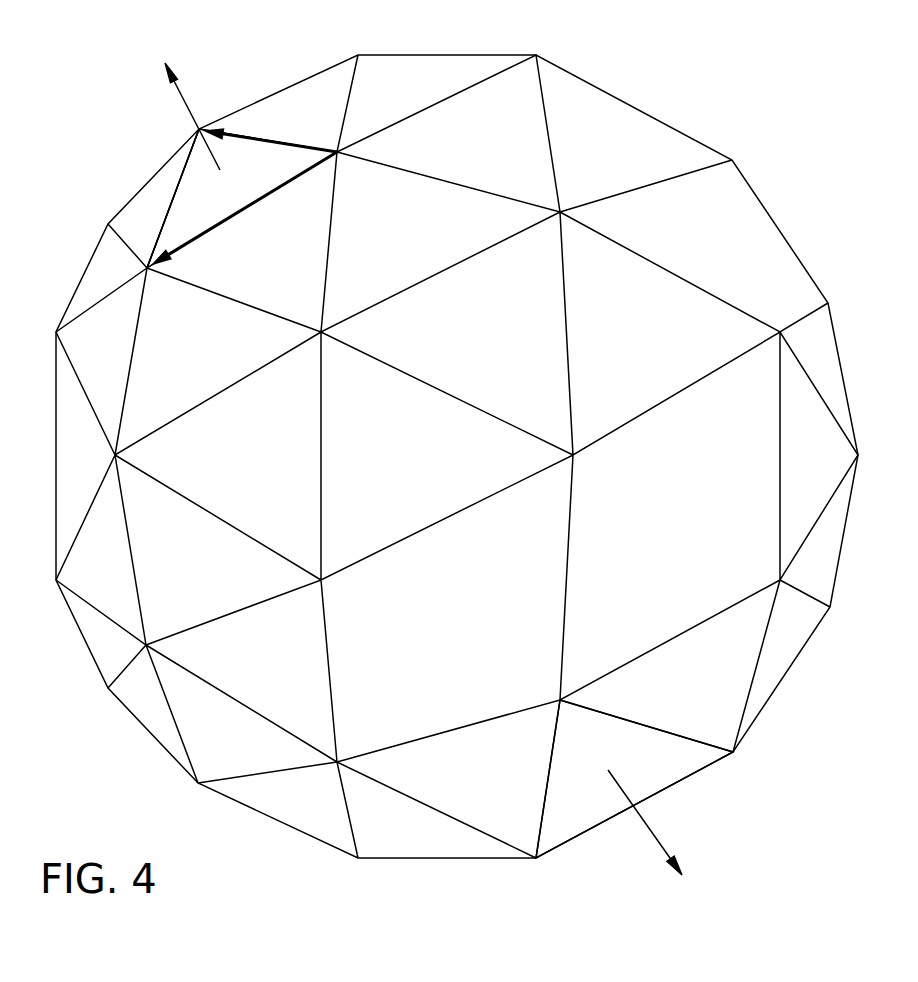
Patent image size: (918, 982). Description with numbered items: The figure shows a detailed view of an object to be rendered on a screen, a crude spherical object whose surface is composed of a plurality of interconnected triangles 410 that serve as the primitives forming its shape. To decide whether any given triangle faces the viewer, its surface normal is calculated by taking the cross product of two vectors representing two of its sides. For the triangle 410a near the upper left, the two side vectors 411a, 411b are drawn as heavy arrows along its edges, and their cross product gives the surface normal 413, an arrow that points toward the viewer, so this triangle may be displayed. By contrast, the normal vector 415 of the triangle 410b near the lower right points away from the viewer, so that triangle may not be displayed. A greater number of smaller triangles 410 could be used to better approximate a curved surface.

The triangles 410 is at (456, 145).
The triangle 410a is at (245, 148).
The triangle 410b is at (687, 763).
The vector 411a is at (293, 143).
The vector 411b is at (172, 197).
The surface normal 413 is at (187, 113).
The normal vector 415 is at (653, 830).